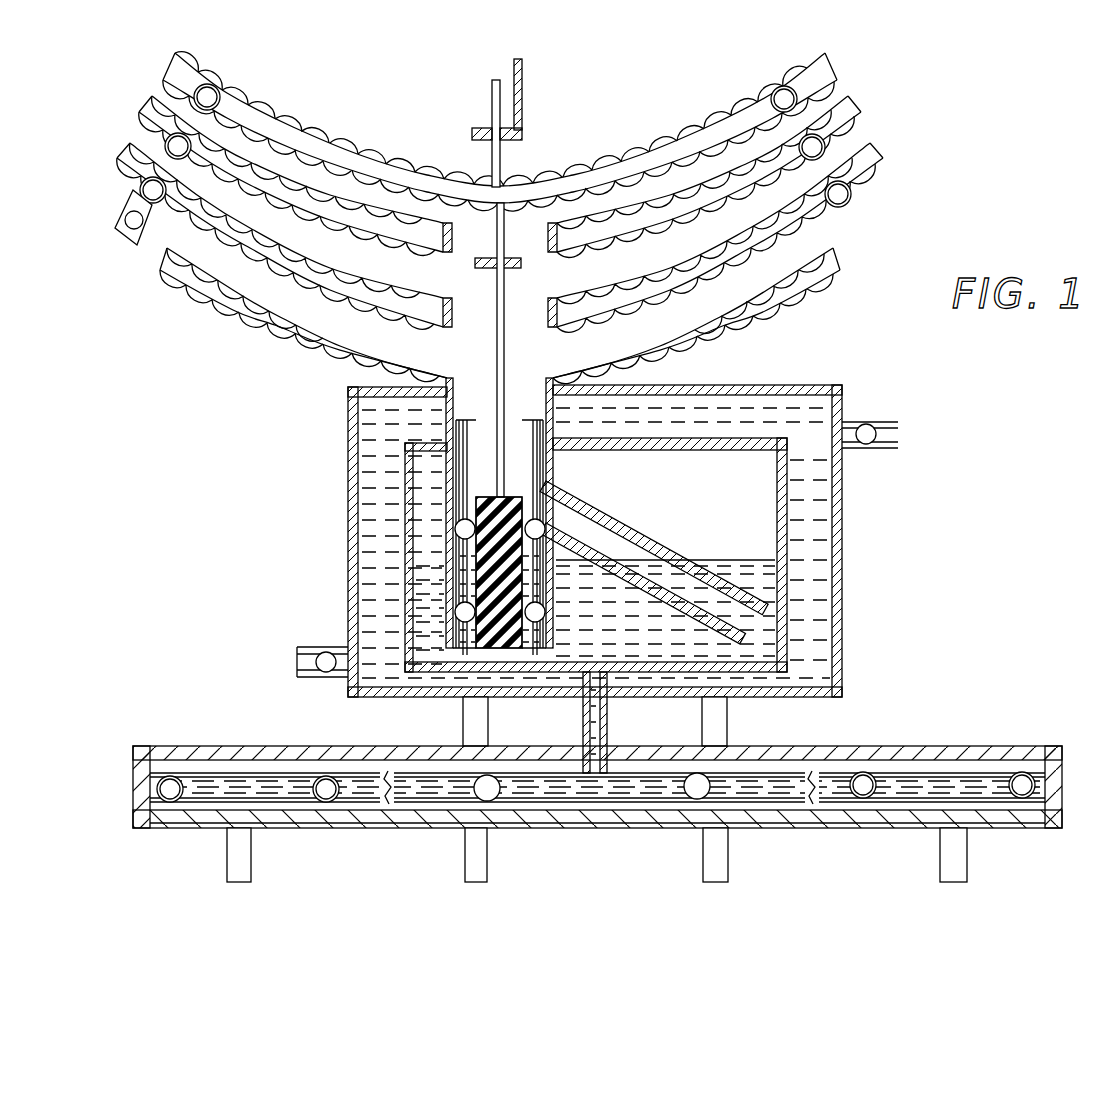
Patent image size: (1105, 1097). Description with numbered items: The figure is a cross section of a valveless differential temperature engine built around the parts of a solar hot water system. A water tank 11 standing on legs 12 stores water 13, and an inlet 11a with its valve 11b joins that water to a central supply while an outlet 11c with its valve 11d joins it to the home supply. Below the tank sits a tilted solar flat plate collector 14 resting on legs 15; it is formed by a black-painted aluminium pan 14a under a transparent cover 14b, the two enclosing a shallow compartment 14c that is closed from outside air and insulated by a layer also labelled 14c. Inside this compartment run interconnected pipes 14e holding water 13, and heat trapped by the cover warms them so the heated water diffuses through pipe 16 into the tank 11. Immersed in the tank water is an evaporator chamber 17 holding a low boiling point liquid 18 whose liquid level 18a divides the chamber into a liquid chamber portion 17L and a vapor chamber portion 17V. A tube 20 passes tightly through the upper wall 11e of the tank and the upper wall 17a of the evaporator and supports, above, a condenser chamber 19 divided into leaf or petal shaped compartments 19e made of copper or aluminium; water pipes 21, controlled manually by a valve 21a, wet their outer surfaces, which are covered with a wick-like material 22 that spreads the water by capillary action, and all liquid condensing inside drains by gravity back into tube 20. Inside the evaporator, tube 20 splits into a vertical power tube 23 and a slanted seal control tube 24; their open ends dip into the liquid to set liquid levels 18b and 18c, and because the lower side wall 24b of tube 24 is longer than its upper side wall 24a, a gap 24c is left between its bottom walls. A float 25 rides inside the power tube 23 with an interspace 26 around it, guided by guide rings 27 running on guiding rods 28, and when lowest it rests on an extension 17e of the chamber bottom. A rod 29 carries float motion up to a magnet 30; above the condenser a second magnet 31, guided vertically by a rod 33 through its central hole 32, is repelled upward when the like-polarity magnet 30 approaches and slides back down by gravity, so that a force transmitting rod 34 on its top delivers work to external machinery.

The water tank 11 is at (632, 525).
The inlet 11a is at (883, 450).
The valve 11b is at (866, 424).
The outlet 11c is at (318, 680).
The valve 11d is at (326, 652).
The upper wall of tank 11e is at (702, 386).
The legs 12 is at (728, 718).
The water 13 is at (812, 540).
The solar flat plate collector 14 is at (603, 772).
The shallow plate or pan 14a is at (310, 810).
The transparent cover 14b is at (955, 750).
The shallow compartment 14c is at (662, 823).
The interconnected pipes 14e is at (180, 776).
The legs 15 is at (967, 845).
The pipe 16 is at (607, 712).
The evaporator chamber 17 is at (785, 568).
The upper wall of evaporator chamber 17a is at (722, 452).
The extension of bottom wall 17e is at (510, 658).
The liquid chamber portion 17L is at (636, 652).
The vapor chamber portion 17V is at (707, 486).
The low boiling point liquid 18 is at (596, 585).
The liquid level 18a is at (742, 560).
The liquid level in tube 23 18b is at (462, 545).
The liquid level in tube 24 18c is at (607, 547).
The condenser chamber 19 is at (495, 212).
The leaf or petal shaped compartments 19e is at (648, 196).
The tube 20 is at (540, 404).
The water pipe 21 is at (190, 152).
The valve 21a is at (118, 222).
The wick-like material 22 is at (777, 285).
The power tube 23 is at (518, 450).
The seal control tube 24 is at (729, 560).
The upper side wall 24a is at (612, 520).
The lower side wall 24b is at (578, 548).
The gap 24c is at (765, 626).
The float 25 is at (514, 592).
The interspace 26 is at (457, 658).
The guide rings 27 is at (455, 530).
The guiding rods 28 is at (472, 425).
The rod 29 is at (505, 325).
The magnet 30 is at (475, 263).
The magnet 31 is at (472, 134).
The central hole 32 is at (510, 140).
The rod 33 is at (492, 106).
The force transmitting rod 34 is at (523, 84).